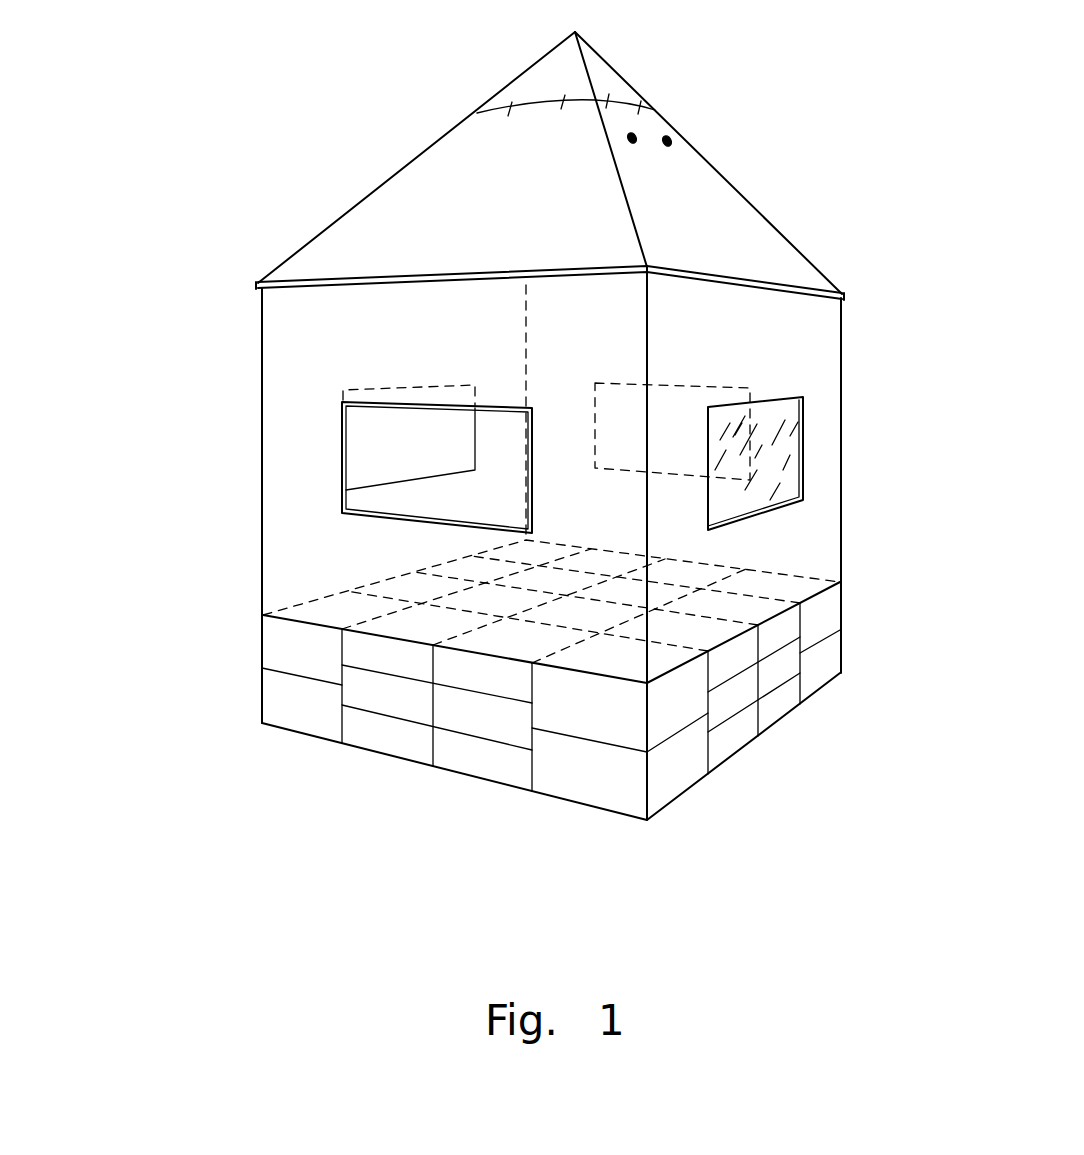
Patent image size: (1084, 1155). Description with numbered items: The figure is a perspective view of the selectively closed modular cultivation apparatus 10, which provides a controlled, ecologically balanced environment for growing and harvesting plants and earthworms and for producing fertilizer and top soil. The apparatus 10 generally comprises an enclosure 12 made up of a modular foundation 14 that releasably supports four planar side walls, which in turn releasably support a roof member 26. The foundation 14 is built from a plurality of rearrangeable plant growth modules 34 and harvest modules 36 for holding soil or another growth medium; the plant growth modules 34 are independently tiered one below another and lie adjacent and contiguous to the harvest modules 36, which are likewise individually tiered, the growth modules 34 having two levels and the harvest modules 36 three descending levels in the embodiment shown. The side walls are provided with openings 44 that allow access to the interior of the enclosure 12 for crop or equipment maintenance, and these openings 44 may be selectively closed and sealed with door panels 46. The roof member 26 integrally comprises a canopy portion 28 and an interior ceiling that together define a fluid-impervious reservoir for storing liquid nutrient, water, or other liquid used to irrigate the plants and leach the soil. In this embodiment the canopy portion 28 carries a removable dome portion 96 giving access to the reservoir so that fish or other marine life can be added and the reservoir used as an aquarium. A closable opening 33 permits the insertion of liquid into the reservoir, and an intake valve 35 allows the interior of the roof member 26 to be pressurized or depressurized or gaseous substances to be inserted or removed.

The selectively closed modular cultivation apparatus 10 is at (288, 120).
The enclosure 12 is at (246, 384).
The modular foundation 14 is at (262, 651).
The roof member 26 is at (768, 213).
The canopy portion 28 is at (375, 212).
The closable opening 33 is at (636, 136).
The intake valve 35 is at (672, 139).
The plant growth modules 34 is at (290, 720).
The harvest modules 36 is at (470, 768).
The openings 44 is at (395, 508).
The door panels 46 is at (790, 459).
The removable dome portion 96 is at (528, 80).